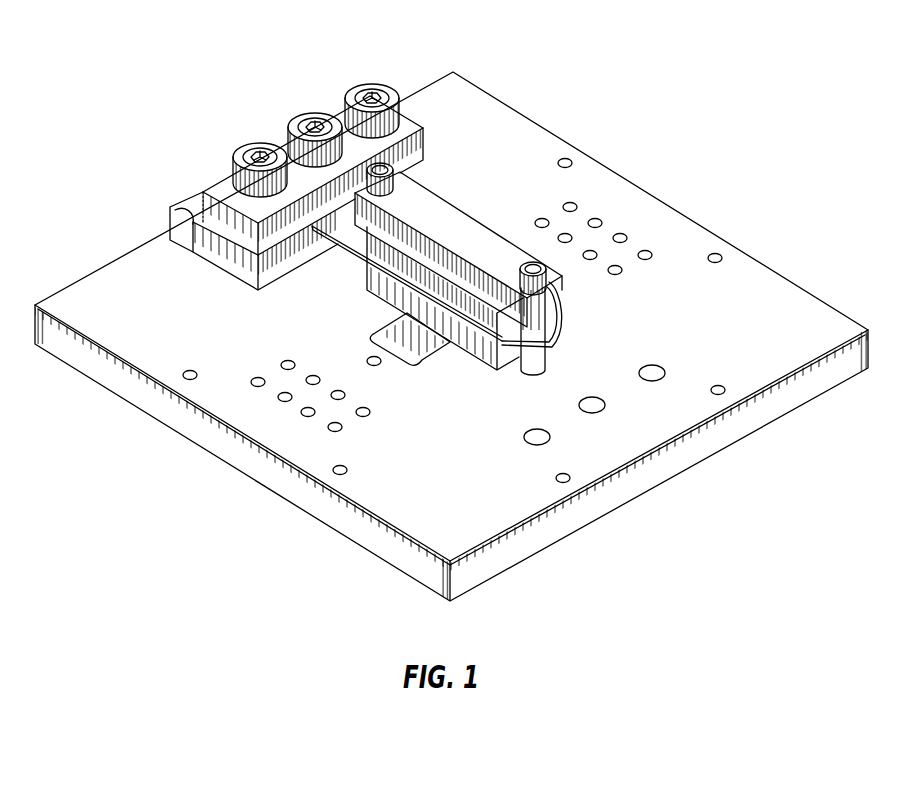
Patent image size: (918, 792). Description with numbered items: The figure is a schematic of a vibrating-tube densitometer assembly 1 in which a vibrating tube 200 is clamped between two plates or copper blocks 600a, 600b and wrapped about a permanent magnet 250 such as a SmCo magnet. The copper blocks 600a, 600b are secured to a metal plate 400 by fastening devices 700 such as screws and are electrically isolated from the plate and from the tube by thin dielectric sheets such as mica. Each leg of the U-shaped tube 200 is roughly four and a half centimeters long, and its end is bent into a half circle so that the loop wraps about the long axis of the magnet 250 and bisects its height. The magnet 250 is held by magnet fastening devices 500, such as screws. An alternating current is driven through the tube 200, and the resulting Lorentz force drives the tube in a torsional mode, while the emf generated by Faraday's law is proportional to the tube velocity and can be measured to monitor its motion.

The test fixture assembly 1 is at (722, 68).
The vibrating tube 200 is at (345, 256).
The permanent magnet 250 is at (470, 338).
The metal plate 400 is at (752, 288).
The magnet fastening devices 500 is at (396, 169).
The copper block 600a is at (210, 207).
The copper block 600b is at (228, 258).
The fastening devices 700 is at (255, 146).